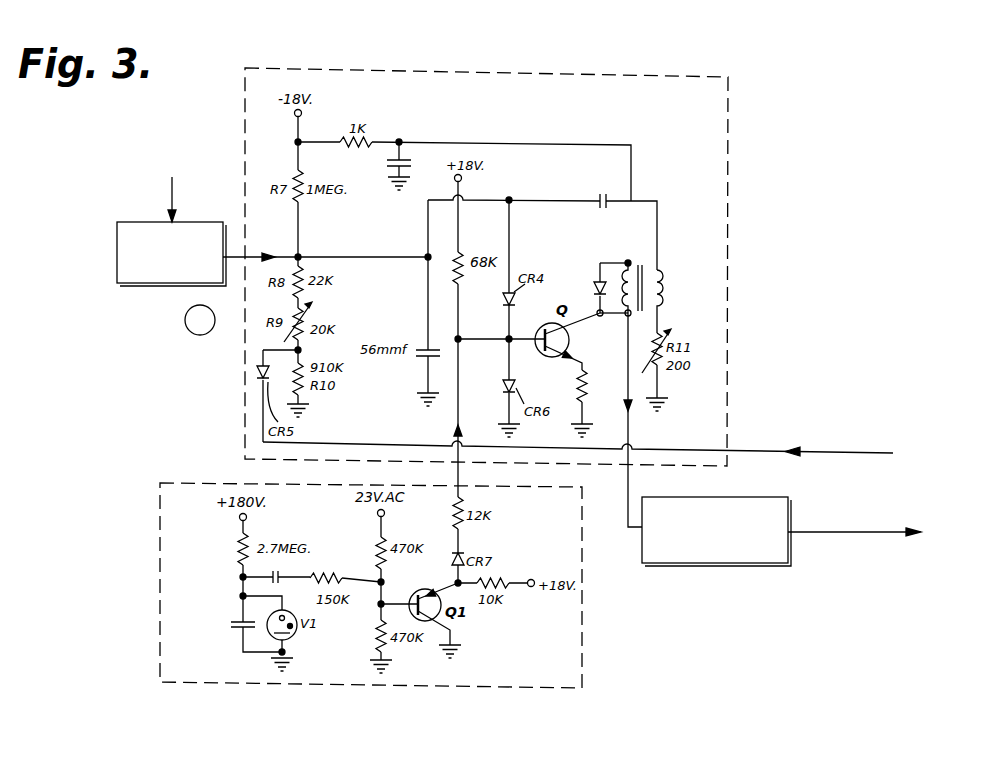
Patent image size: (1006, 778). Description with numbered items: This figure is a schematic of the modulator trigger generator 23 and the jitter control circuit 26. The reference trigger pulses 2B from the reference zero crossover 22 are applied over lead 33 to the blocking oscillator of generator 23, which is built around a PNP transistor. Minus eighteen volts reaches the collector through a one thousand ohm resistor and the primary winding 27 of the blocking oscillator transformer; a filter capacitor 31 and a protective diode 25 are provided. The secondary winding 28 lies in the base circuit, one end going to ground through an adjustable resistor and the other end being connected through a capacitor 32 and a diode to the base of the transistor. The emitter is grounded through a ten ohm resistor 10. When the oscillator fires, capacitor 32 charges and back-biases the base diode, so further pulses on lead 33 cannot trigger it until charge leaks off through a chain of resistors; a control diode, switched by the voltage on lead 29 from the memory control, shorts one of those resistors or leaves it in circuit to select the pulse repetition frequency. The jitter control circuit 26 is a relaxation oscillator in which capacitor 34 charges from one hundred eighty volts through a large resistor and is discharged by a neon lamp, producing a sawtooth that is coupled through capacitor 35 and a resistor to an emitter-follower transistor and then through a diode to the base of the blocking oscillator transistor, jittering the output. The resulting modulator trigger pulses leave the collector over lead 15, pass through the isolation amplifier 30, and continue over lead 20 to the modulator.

The reference zero crossover 22 is at (139, 222).
The reference trigger pulses 2B is at (237, 259).
The modulator trigger generator 23 is at (477, 101).
The filter capacitor 31 is at (387, 167).
The capacitor 32 is at (598, 206).
The lead 33 is at (292, 254).
The protective diode 25 is at (595, 283).
The primary winding 27 is at (621, 292).
The secondary winding 28 is at (663, 291).
The lead 15 is at (630, 439).
The lead 29 is at (748, 452).
The lead 20 is at (806, 528).
The isolation amplifier 30 is at (731, 563).
The jitter control circuit 26 is at (160, 523).
The capacitor 34 is at (238, 630).
The capacitor 35 is at (279, 584).
The emitter resistor of transistor Q 10 is at (592, 386).